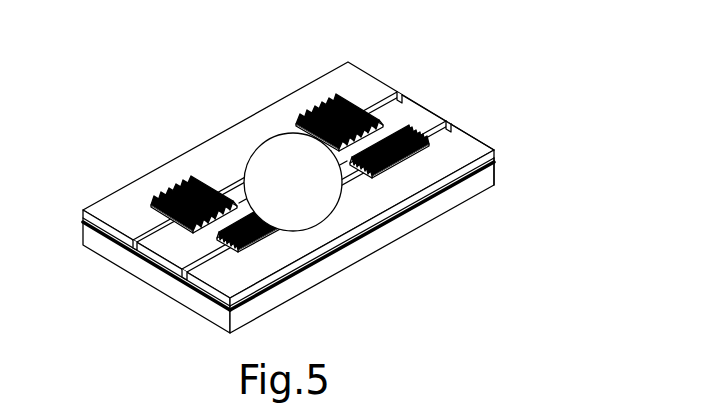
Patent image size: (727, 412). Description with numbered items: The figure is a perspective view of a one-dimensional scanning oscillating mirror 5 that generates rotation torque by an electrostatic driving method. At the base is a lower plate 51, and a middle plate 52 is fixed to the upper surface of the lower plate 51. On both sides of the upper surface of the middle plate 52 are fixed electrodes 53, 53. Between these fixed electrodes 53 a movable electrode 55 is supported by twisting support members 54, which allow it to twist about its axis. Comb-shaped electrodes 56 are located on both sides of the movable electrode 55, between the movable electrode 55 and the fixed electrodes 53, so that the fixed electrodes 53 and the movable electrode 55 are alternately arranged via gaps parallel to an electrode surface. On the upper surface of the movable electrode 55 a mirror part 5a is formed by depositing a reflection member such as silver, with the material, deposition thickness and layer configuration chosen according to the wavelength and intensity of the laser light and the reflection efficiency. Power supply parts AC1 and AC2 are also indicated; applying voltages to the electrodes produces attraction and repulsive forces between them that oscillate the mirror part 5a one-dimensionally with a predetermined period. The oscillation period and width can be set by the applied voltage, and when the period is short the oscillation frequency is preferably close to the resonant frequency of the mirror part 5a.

The oscillating mirror 5 is at (208, 137).
The mirror part 5a is at (302, 170).
The lower plate 51 is at (407, 217).
The middle plate 52 is at (253, 297).
The fixed electrode 53 is at (125, 198).
The twisting support member 54 is at (388, 92).
The movable electrode 55 is at (275, 153).
The comb-shaped electrode 56 is at (318, 100).
The power supply part AC1 is at (452, 148).
The power supply part AC2 is at (465, 188).